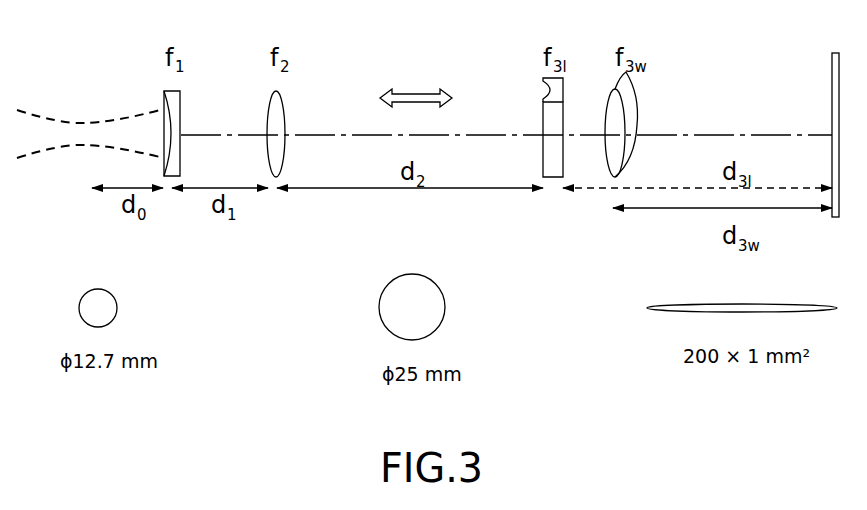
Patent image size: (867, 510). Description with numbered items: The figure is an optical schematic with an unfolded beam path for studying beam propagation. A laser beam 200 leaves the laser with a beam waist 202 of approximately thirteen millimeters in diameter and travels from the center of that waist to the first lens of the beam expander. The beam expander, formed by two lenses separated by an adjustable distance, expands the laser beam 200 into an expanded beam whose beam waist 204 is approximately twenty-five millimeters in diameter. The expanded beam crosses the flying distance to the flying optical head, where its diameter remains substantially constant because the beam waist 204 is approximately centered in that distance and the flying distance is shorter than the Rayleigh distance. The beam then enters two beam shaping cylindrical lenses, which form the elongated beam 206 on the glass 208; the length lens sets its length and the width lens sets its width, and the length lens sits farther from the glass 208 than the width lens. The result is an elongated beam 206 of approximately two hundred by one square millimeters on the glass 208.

The laser beam 200 is at (125, 117).
The beam waist 202 is at (114, 296).
The beam waist of expanded laser beam 204 is at (443, 292).
The elongated beam 206 is at (773, 304).
The glass 208 is at (832, 75).